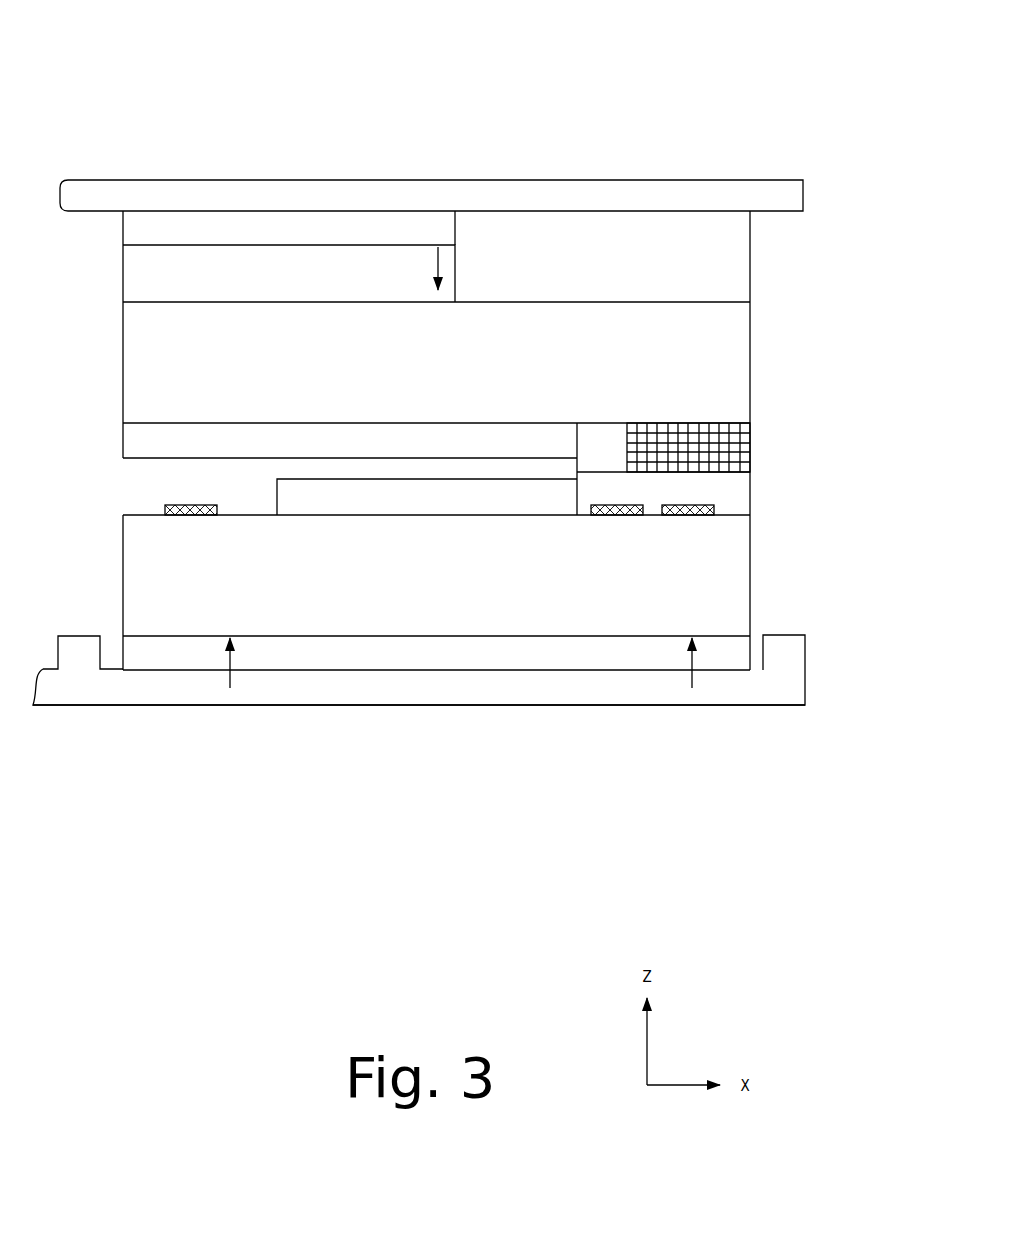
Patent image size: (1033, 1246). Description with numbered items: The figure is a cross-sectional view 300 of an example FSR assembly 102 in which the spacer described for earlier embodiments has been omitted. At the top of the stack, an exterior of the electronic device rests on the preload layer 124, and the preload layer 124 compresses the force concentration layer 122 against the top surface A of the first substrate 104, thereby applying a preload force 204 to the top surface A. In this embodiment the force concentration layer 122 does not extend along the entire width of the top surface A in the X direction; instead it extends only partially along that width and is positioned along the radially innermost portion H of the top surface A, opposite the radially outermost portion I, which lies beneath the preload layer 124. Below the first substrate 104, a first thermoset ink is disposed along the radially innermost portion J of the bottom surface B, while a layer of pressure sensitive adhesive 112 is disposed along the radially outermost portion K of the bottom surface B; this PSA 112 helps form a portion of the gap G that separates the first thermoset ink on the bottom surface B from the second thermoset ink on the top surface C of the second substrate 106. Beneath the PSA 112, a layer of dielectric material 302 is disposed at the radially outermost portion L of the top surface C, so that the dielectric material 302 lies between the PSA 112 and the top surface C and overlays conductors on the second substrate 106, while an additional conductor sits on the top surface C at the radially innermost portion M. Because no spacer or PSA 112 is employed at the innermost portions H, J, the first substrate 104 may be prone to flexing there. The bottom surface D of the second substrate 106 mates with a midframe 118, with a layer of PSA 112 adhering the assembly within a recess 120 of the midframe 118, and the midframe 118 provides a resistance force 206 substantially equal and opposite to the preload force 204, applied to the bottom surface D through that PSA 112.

The cross-sectional view 300 is at (690, 70).
The preload force 204 is at (439, 285).
The force concentration layer 122 is at (436, 273).
The preload layer 124 is at (572, 239).
The first substrate 104 is at (436, 378).
The FSR assembly 102 is at (758, 352).
The pressure sensitive adhesive 112 is at (750, 460).
The dielectric material 302 is at (750, 485).
The second substrate 106 is at (436, 551).
The recess 120 is at (118, 655).
The midframe 118 is at (530, 706).
The resistance force 206 is at (228, 660).
The radially innermost portion H is at (147, 294).
The top surface A is at (121, 299).
The radially outermost portion I is at (722, 294).
The gap G is at (284, 472).
The radially outermost portion K is at (718, 433).
The bottom surface B is at (121, 426).
The radially innermost portion J is at (152, 429).
The radially innermost portion M is at (148, 508).
The top surface C is at (263, 507).
The radially outermost portion L is at (729, 507).
The bottom surface D is at (753, 640).